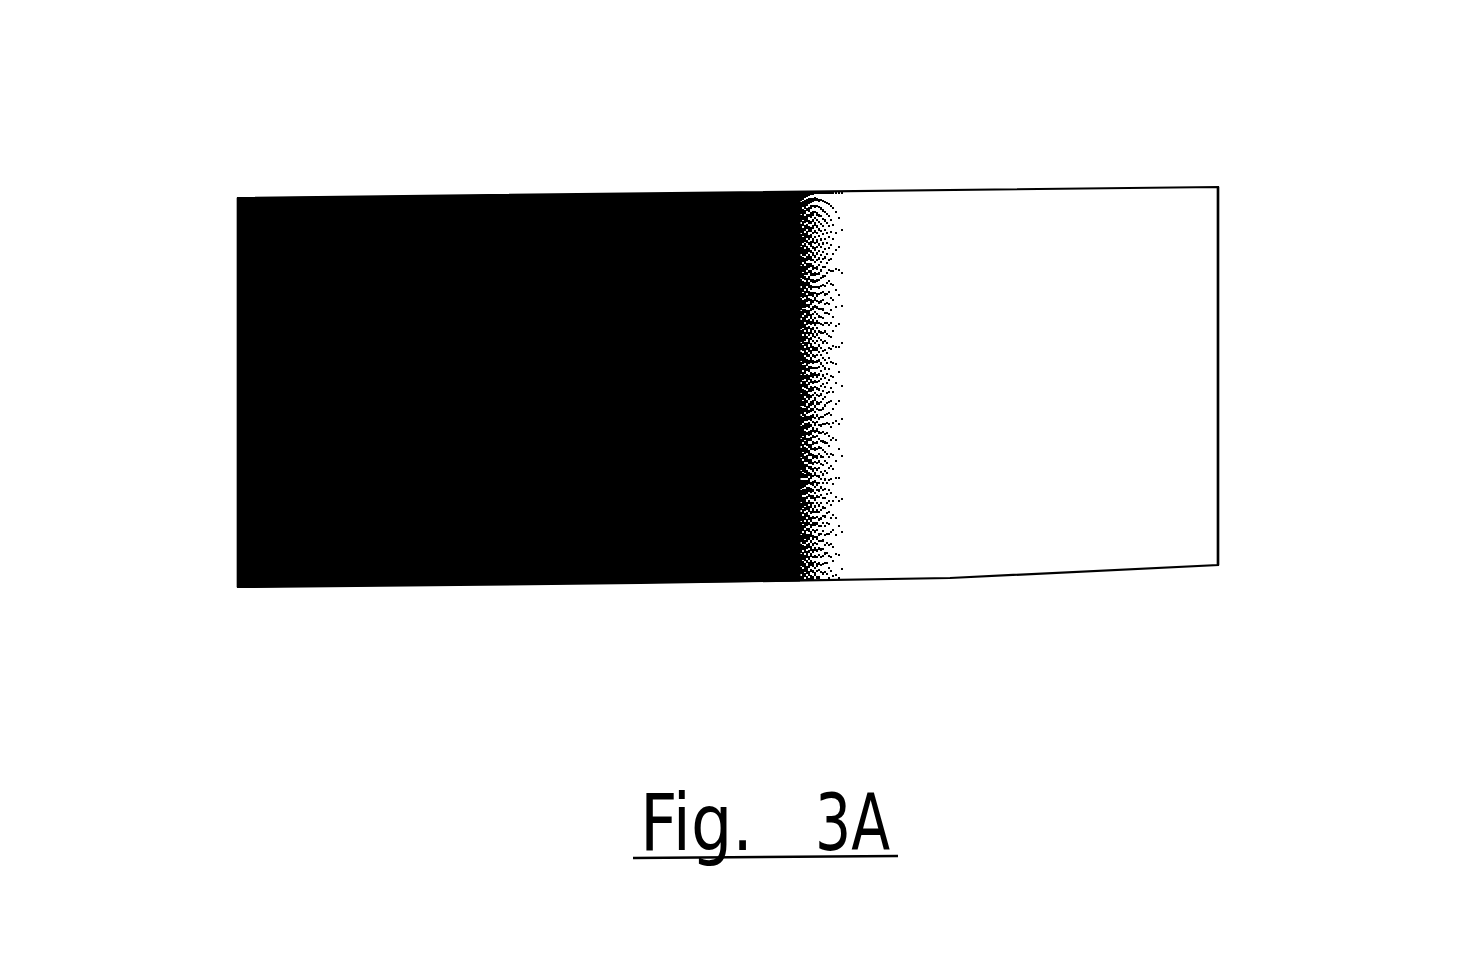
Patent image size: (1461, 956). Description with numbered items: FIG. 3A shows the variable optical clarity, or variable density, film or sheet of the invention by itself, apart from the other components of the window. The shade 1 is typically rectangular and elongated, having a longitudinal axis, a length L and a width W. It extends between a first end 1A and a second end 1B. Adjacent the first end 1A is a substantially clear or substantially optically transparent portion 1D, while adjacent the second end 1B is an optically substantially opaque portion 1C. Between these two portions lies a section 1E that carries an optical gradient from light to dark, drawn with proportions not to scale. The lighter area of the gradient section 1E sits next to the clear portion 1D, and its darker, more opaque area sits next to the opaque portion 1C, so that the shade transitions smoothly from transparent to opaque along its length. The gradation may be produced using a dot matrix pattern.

The shade 1 is at (1203, 72).
The first end 1A is at (1272, 376).
The second end 1B is at (179, 392).
The opaque portion 1C is at (601, 185).
The clear portion 1D is at (1217, 172).
The gradient section 1E is at (851, 182).
The width W is at (1243, 182).
The length L is at (1218, 590).